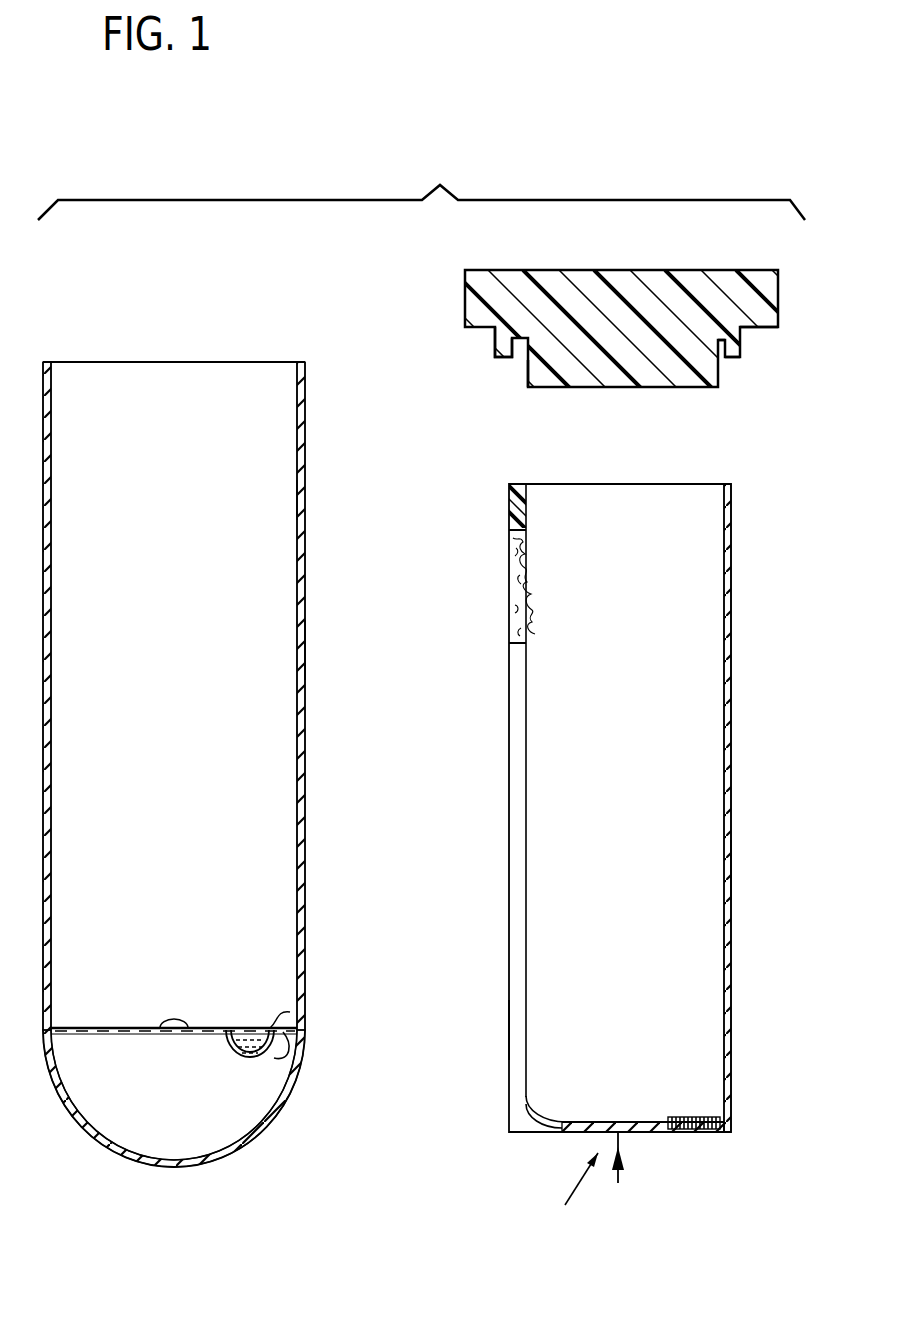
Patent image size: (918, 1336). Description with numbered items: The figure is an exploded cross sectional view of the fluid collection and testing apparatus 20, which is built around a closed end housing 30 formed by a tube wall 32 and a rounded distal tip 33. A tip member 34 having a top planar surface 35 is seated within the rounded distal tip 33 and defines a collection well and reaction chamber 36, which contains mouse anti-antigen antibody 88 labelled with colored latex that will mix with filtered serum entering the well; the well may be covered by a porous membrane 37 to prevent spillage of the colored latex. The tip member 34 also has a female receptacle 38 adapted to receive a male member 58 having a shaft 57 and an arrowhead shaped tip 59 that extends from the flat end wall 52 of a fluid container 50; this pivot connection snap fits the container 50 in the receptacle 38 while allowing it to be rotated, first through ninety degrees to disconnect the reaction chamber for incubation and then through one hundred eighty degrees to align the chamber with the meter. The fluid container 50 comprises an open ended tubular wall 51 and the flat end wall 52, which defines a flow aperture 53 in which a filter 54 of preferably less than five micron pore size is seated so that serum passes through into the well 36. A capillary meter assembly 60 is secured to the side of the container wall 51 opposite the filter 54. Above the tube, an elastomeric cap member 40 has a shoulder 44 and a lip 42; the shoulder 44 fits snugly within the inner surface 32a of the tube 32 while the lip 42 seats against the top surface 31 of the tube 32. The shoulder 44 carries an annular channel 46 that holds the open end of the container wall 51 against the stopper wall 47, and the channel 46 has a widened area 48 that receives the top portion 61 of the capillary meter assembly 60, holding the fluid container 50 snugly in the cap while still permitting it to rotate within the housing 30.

The fluid collection and testing apparatus 20 is at (440, 185).
The closed end housing 30 is at (305, 582).
The top surface of tube 31 is at (312, 370).
The tube wall 32 is at (305, 648).
The inner surface of tube 32a is at (297, 507).
The rounded distal tip 33 is at (127, 1153).
The tip member 34 is at (255, 1108).
The top planar surface 35 is at (100, 1028).
The collection well and reaction chamber 36 is at (306, 1052).
The porous membrane 37 is at (260, 1030).
The female receptacle 38 is at (178, 1026).
The mouse anti-antigen antibody 88 is at (295, 1012).
The elastomeric cap member 40 is at (780, 292).
The lip 42 is at (765, 330).
The shoulder 44 is at (745, 355).
The annular channel 46 is at (727, 353).
The stopper wall 47 is at (520, 378).
The widened area 48 is at (518, 350).
The fluid container 50 is at (732, 688).
The tubular wall 51 is at (732, 860).
The flat end wall 52 is at (657, 1133).
The flow aperture 53 is at (702, 1135).
The filter 54 is at (690, 1118).
The shaft 57 is at (600, 1133).
The male member 58 is at (566, 1190).
The arrowhead shaped tip 59 is at (618, 1183).
The capillary meter assembly 60 is at (508, 1030).
The top portion of capillary meter assembly 61 is at (509, 498).